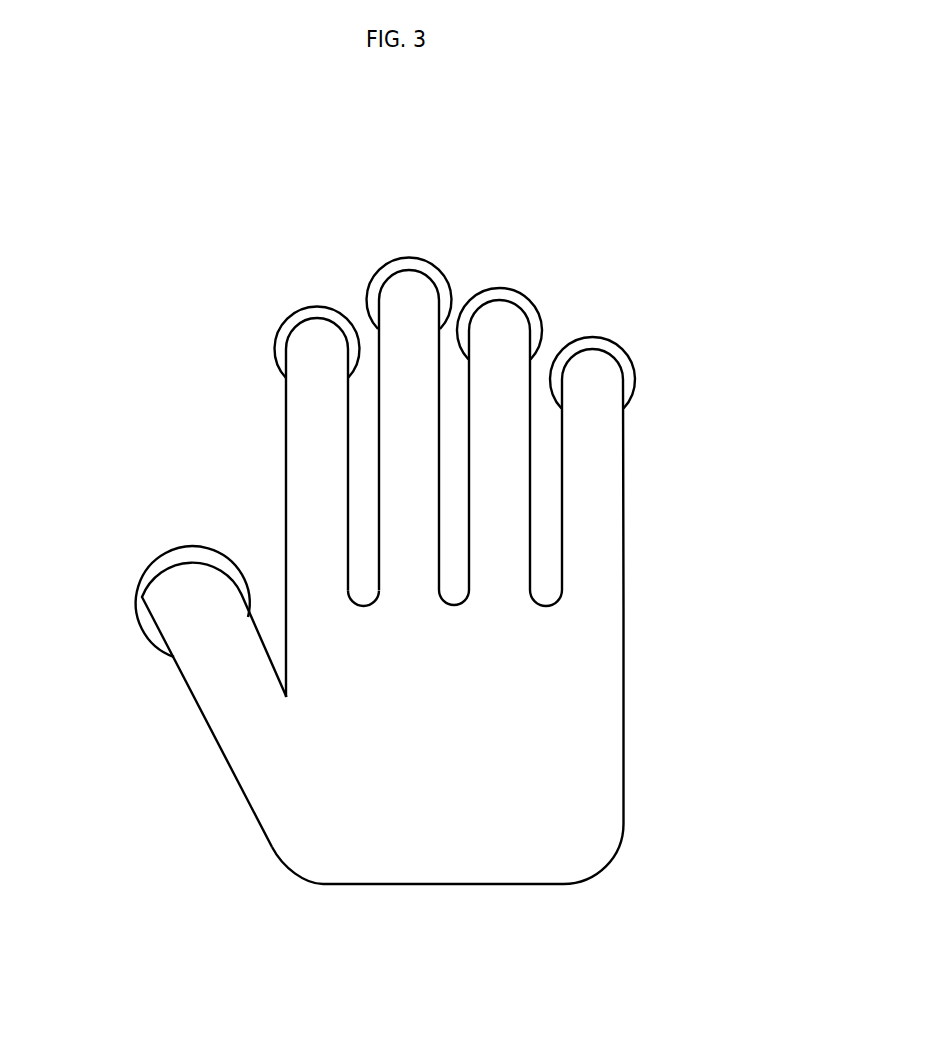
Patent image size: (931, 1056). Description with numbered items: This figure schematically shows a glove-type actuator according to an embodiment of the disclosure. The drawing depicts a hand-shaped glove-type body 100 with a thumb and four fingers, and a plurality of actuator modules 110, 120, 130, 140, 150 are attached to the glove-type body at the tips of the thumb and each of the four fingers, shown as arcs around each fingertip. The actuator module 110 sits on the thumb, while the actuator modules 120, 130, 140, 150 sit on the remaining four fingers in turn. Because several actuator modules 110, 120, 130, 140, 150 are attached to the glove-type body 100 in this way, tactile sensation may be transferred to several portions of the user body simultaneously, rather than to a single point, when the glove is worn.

The hand-shaped sensor pad 100 is at (585, 720).
The actuator module 110 is at (165, 562).
The actuator module 120 is at (296, 318).
The actuator module 130 is at (421, 266).
The actuator module 140 is at (522, 303).
The actuator module 150 is at (628, 363).